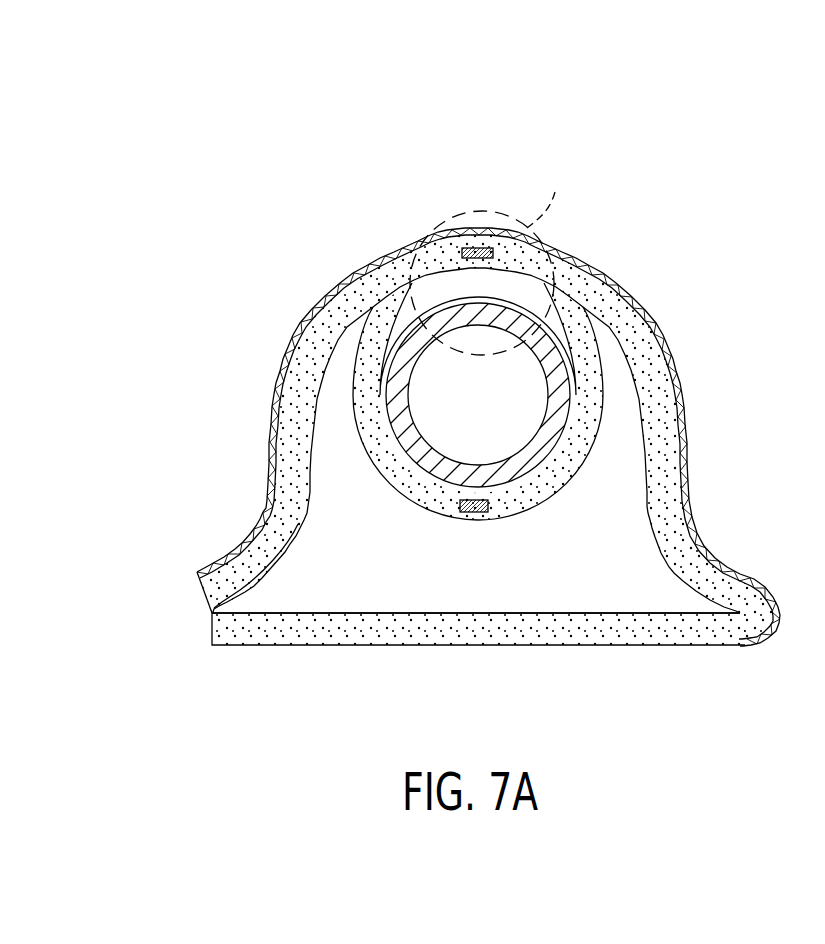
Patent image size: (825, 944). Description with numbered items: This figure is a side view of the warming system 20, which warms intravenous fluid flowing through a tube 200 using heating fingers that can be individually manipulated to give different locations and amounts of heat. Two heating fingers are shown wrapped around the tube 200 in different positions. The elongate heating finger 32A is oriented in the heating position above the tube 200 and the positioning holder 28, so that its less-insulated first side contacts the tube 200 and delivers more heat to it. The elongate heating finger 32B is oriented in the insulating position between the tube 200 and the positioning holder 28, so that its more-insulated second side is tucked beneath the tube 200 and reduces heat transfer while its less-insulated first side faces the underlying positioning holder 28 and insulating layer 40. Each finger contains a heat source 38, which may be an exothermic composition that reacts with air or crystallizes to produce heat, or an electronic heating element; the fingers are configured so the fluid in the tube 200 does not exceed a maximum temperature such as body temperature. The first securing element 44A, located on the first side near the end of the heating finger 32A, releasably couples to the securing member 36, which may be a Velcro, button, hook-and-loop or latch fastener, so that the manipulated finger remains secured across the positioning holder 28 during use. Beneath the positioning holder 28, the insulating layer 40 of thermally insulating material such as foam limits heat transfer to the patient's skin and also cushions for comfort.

The warming system 20 is at (310, 168).
The positioning holder 28 is at (297, 597).
The elongate heating finger 32A is at (300, 365).
The elongate heating finger 32B is at (402, 472).
The securing member 36 is at (257, 593).
The heat source 38 is at (470, 247).
The insulating layer 40 is at (653, 633).
The first securing element 44A is at (212, 610).
The tube 200 is at (540, 448).